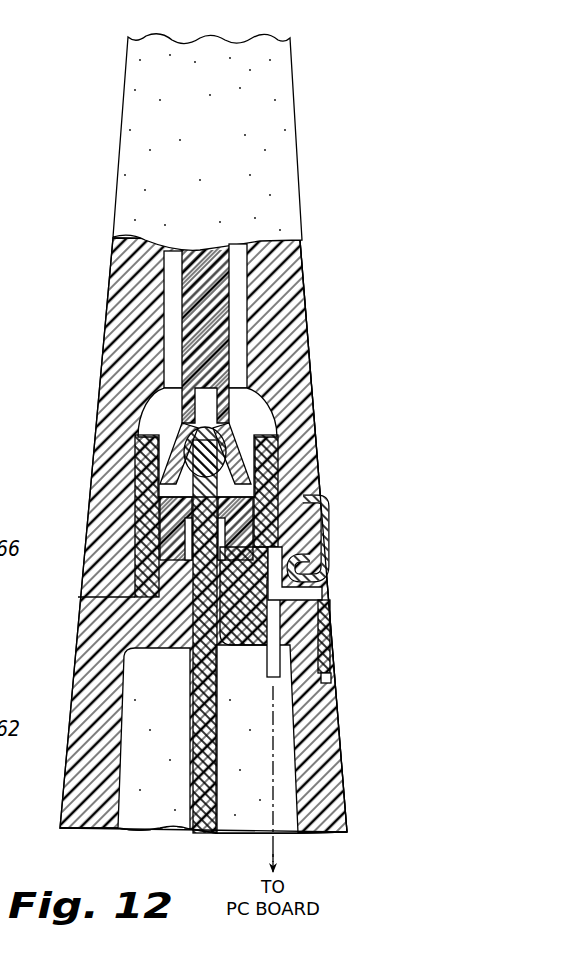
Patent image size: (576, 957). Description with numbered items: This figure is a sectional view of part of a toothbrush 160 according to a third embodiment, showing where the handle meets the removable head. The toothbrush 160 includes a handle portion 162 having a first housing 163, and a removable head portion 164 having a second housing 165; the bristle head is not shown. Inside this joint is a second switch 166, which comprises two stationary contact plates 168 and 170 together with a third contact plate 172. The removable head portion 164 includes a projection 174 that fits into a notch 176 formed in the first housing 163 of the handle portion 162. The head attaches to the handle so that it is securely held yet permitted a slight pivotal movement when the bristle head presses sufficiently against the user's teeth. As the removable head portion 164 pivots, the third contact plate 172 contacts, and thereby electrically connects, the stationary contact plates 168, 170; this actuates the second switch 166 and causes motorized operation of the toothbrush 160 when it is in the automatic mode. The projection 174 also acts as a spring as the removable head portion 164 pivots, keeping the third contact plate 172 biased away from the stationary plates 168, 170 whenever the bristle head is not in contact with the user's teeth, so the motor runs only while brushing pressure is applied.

The toothbrush 160 is at (357, 440).
The handle portion 162 is at (368, 730).
The first housing 163 is at (345, 778).
The removable head portion 164 is at (78, 368).
The second housing 165 is at (306, 334).
The second switch 166 is at (345, 581).
The stationary contact plate 168 is at (265, 670).
The stationary contact plate 170 is at (267, 656).
The third contact plate 172 is at (326, 516).
The projection 174 is at (334, 626).
The notch 176 is at (337, 680).